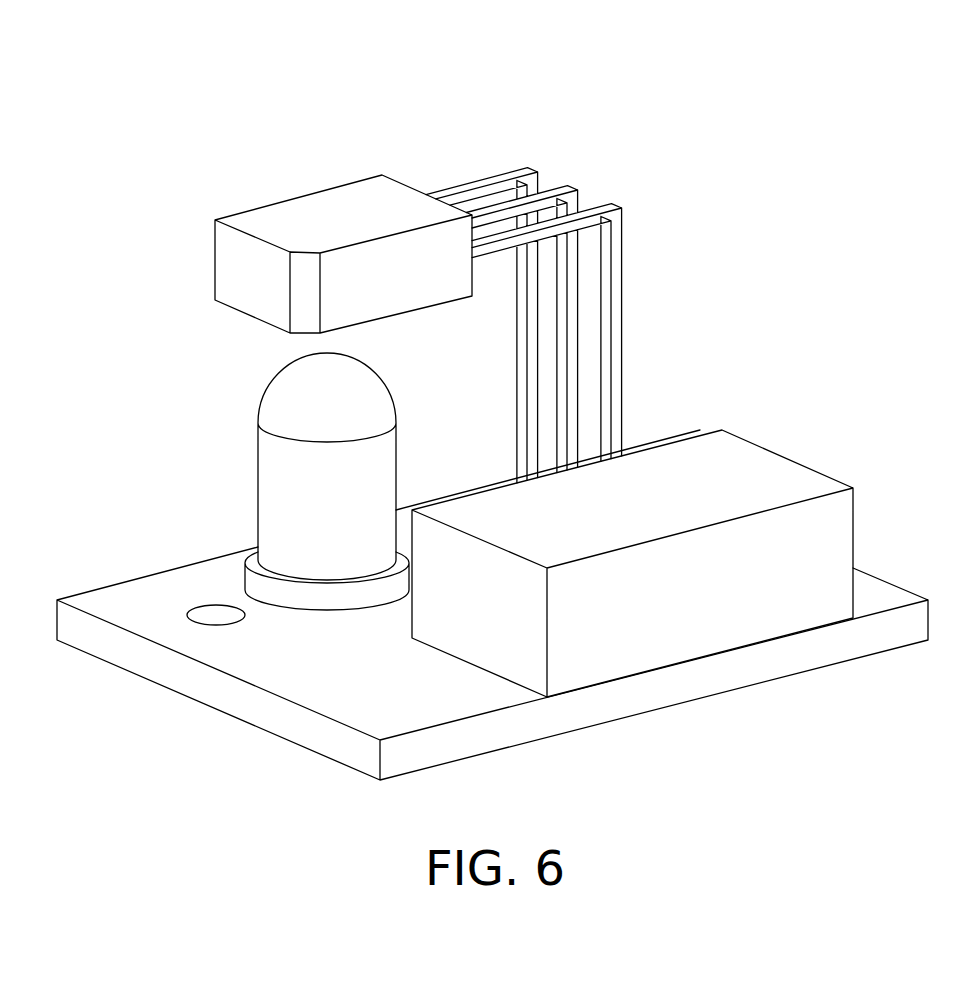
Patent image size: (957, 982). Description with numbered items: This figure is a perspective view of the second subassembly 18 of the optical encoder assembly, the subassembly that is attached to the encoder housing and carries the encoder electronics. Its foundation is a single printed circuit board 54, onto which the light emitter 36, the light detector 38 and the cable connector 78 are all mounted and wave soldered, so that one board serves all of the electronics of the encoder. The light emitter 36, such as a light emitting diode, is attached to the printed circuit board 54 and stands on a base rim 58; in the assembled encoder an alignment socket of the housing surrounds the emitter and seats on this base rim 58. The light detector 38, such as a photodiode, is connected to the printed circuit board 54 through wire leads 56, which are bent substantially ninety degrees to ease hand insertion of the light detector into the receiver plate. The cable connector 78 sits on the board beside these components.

The second subassembly 18 is at (132, 141).
The light emitter 36 is at (287, 363).
The light detector 38 is at (223, 253).
The printed circuit board 54 is at (222, 695).
The wire lead 56 is at (520, 353).
The base rim 58 is at (335, 602).
The cable connector 78 is at (785, 465).